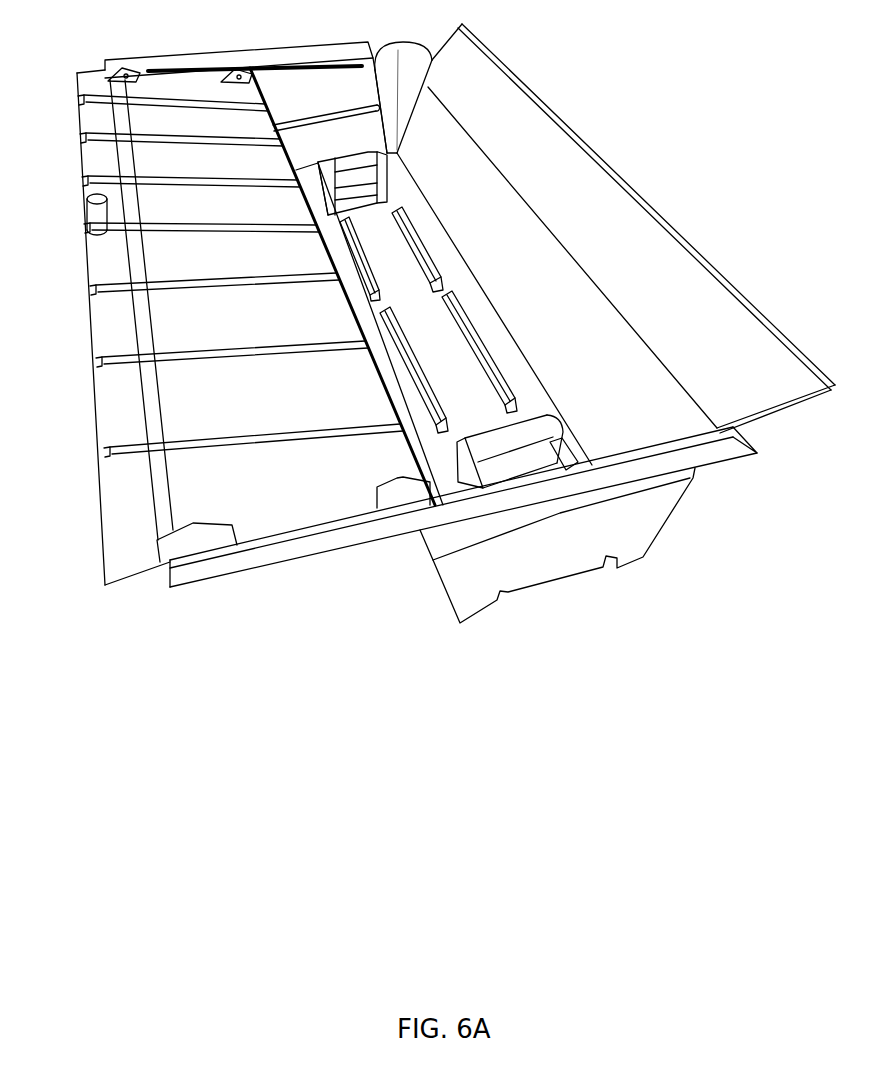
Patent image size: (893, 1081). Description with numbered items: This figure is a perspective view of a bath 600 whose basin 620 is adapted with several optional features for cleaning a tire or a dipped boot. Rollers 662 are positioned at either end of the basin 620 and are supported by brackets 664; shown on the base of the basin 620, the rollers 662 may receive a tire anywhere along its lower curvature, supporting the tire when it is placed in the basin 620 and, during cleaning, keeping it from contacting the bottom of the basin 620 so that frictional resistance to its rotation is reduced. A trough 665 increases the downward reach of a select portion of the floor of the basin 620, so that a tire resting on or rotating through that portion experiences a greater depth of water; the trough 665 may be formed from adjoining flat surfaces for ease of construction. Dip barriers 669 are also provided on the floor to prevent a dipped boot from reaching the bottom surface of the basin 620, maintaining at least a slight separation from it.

The bath 600 is at (636, 99).
The basin 620 is at (437, 198).
The trough 665 is at (408, 291).
The dip barriers 669 is at (478, 351).
The rollers 662 is at (508, 452).
The brackets 664 is at (560, 440).